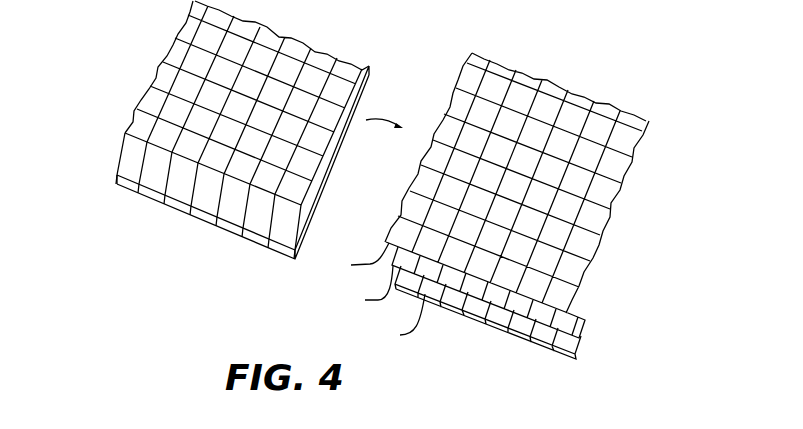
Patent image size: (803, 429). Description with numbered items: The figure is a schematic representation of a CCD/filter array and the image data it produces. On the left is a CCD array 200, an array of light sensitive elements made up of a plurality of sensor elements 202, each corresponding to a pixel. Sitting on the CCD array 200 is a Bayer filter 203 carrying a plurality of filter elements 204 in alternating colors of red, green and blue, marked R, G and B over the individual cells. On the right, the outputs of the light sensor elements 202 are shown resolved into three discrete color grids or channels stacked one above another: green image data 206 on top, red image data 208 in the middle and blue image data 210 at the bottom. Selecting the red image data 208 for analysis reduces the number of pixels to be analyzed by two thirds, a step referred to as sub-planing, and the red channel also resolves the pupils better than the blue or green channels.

The CCD array 200 is at (204, 149).
The sensor elements 202 is at (283, 233).
The Bayer filter 203 is at (131, 155).
The filter elements 204 is at (157, 93).
The green image data 206 is at (554, 90).
The red image data 208 is at (586, 322).
The blue image data 210 is at (552, 344).